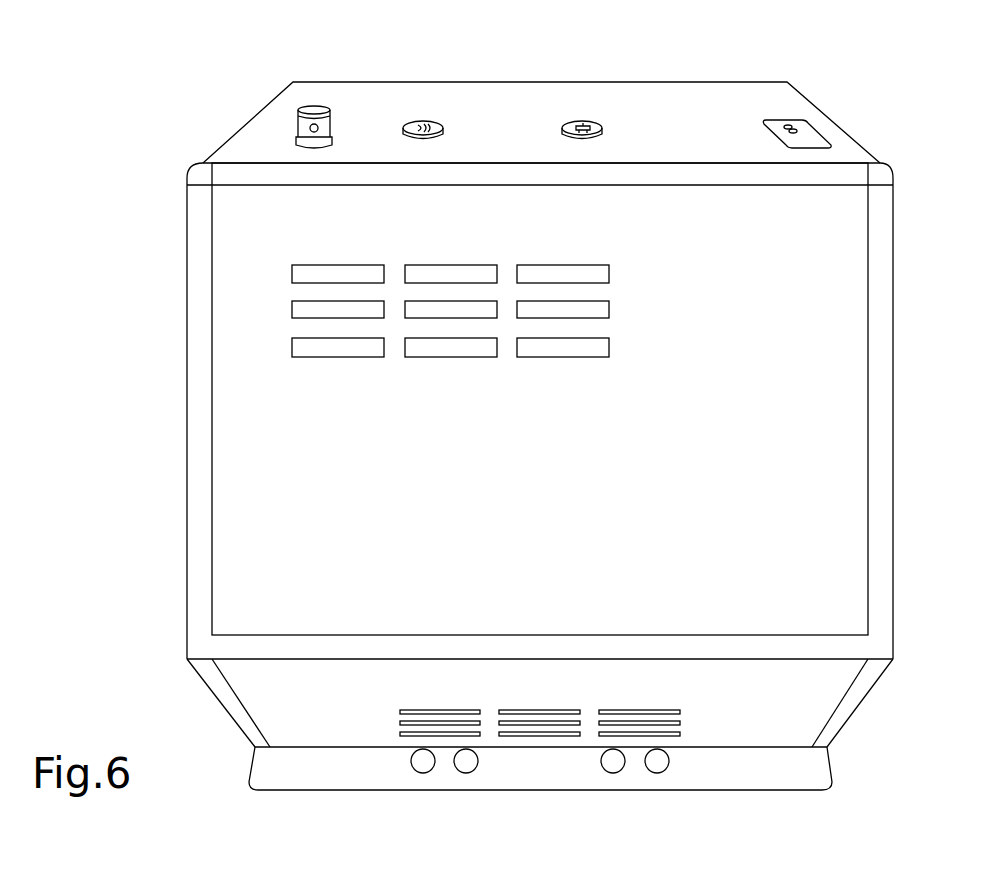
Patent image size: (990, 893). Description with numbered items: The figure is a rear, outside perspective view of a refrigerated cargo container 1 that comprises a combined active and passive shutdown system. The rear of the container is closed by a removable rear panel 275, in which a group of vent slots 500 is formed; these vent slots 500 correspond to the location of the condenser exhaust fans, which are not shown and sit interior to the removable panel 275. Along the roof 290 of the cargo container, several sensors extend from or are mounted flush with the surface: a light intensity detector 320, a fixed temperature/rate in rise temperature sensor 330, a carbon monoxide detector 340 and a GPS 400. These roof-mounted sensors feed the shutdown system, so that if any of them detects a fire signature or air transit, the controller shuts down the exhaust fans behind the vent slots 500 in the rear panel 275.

The refrigerated cargo container 1 is at (910, 80).
The removable rear panel 275 is at (845, 347).
The roof 290 is at (488, 97).
The light intensity detector 320 is at (313, 106).
The fixed temperature/rate in rise temperature sensor 330 is at (597, 127).
The carbon monoxide detector 340 is at (410, 126).
The GPS 400 is at (810, 140).
The vent slots 500 is at (562, 265).